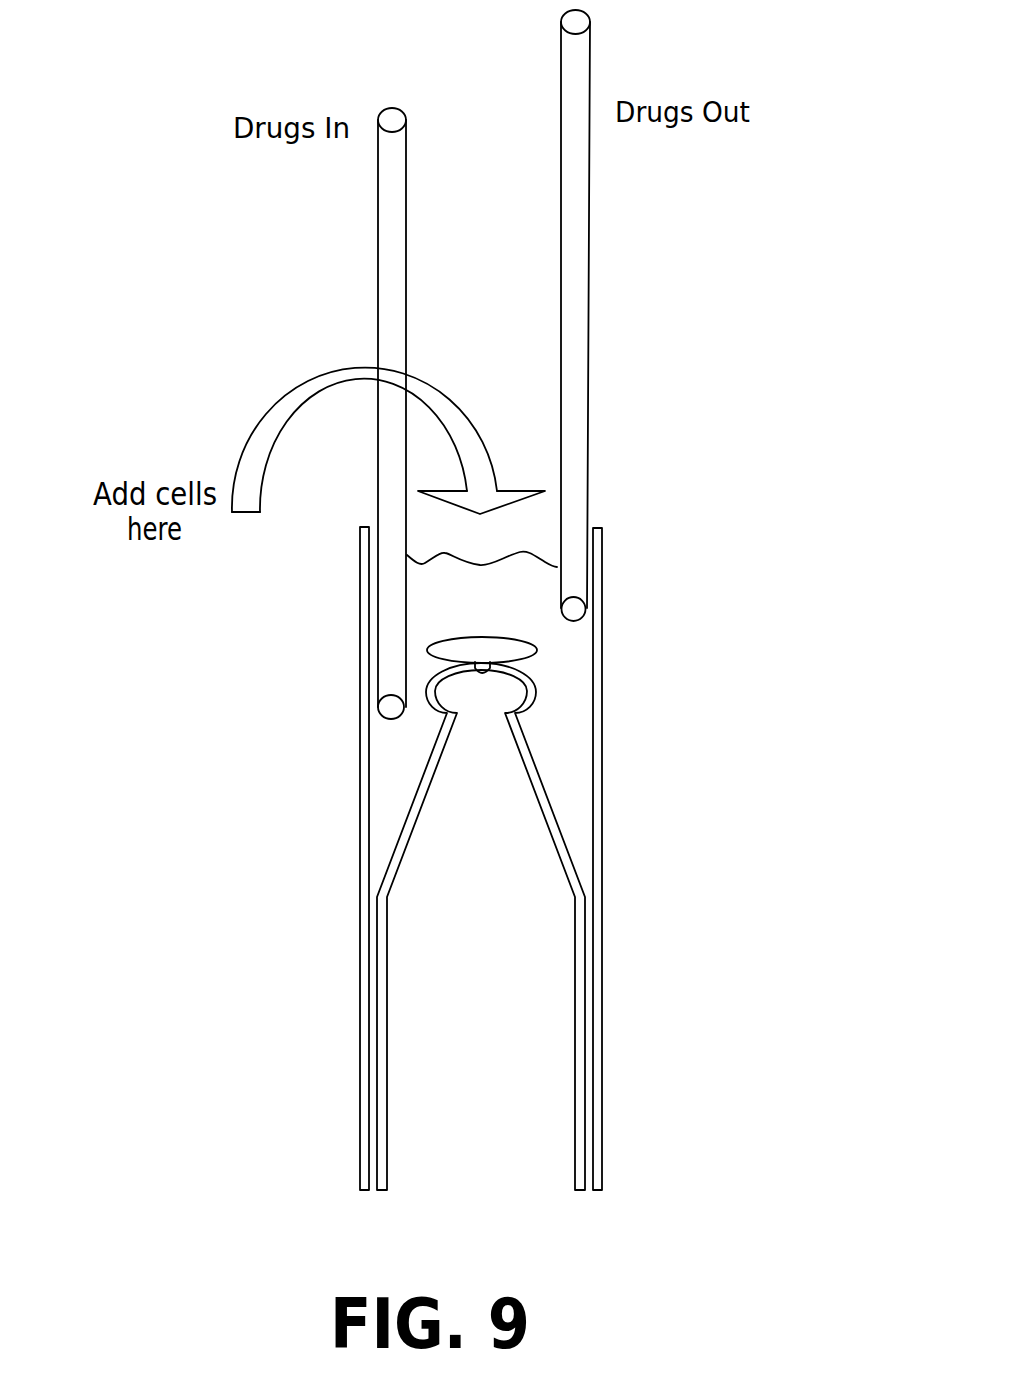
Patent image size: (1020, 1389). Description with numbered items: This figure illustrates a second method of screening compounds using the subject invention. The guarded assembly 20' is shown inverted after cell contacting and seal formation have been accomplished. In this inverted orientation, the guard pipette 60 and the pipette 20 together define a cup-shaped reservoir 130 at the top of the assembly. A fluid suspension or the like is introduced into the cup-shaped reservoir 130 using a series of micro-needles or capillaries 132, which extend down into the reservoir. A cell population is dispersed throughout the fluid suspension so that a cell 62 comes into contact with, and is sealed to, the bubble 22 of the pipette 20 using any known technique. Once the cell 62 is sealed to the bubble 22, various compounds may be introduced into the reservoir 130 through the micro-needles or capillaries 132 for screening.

The micro-needles or capillaries 132 is at (393, 277).
The cup-shaped reservoir 130 is at (567, 688).
The cell 62 is at (450, 638).
The bubble 22 is at (435, 711).
The guarded assembly 20' is at (557, 858).
The guard pipette 60 is at (602, 1022).
The pipette 20 is at (472, 1062).